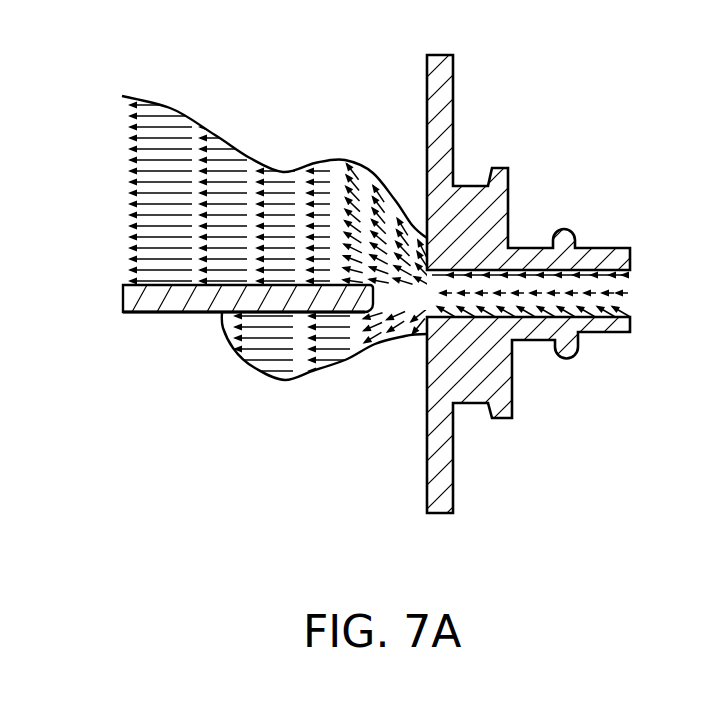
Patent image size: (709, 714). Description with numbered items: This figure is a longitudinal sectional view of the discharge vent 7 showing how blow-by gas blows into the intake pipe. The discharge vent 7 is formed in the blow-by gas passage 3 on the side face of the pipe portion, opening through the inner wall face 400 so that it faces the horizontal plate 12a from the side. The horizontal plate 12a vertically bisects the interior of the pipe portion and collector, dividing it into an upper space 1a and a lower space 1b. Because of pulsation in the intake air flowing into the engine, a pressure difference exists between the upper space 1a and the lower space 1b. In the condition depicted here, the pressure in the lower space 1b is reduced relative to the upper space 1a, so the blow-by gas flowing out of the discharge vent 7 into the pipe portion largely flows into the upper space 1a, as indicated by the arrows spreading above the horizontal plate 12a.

The upper space 1a is at (370, 129).
The lower space 1b is at (375, 464).
The horizontal plate 12a is at (127, 304).
The blow-by gas passage 3 is at (600, 270).
The discharge vent 7 is at (457, 317).
The inner wall face 400 is at (427, 378).